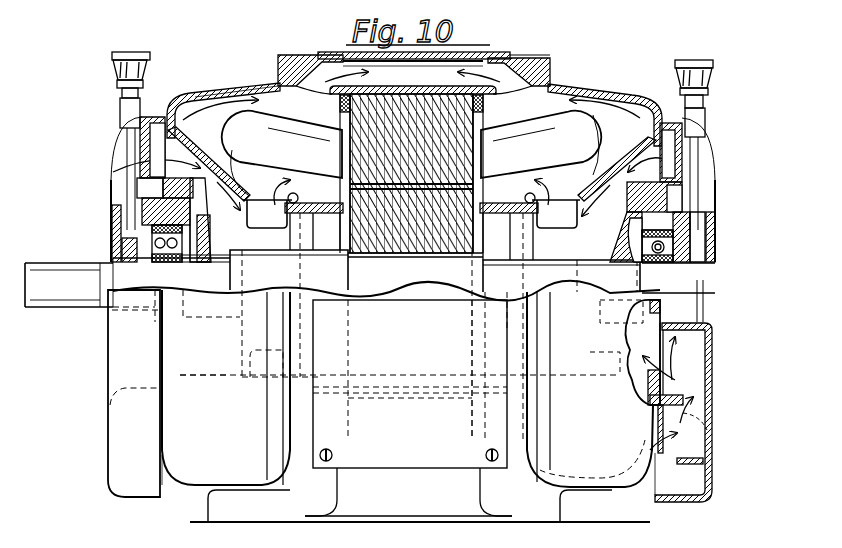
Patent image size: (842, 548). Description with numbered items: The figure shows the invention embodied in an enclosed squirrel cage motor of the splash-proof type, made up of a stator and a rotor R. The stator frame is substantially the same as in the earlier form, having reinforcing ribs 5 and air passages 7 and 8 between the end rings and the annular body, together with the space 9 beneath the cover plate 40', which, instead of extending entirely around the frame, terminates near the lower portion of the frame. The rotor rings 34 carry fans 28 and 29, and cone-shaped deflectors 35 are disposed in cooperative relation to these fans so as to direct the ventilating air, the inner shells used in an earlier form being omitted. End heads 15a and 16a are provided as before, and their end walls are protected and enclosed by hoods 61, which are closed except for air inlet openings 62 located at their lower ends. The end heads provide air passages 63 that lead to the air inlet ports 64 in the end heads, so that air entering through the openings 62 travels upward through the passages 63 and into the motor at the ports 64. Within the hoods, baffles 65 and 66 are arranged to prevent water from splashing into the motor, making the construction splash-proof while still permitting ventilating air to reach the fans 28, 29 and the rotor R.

The reinforcing ribs 5 is at (552, 62).
The air passage 7 is at (298, 72).
The air passage 8 is at (545, 72).
The air passage 9 is at (412, 73).
The end head 15a is at (255, 82).
The end head 16a is at (598, 88).
The fan 28 is at (262, 210).
The fan 29 is at (572, 212).
The rotor rings 34 is at (314, 236).
The cone-shaped deflectors 35 is at (192, 142).
The cover plate 40' is at (433, 38).
The hoods 61 is at (127, 455).
The air inlet openings 62 is at (170, 485).
The air passages 63 is at (697, 380).
The air inlet ports 64 is at (147, 162).
The baffle 65 is at (692, 453).
The baffle 66 is at (670, 407).
The rotor R is at (417, 238).